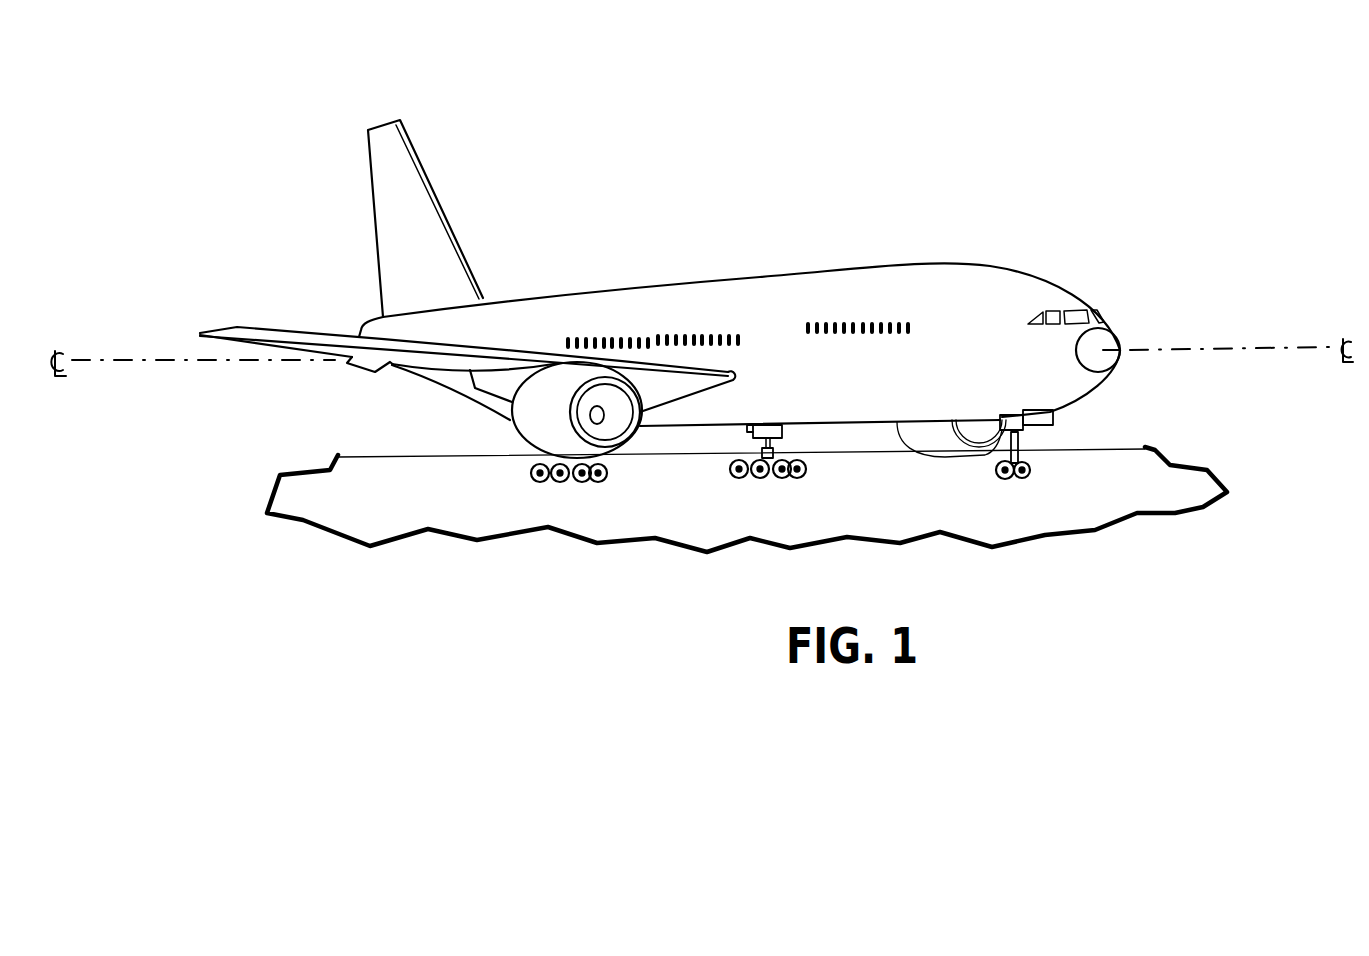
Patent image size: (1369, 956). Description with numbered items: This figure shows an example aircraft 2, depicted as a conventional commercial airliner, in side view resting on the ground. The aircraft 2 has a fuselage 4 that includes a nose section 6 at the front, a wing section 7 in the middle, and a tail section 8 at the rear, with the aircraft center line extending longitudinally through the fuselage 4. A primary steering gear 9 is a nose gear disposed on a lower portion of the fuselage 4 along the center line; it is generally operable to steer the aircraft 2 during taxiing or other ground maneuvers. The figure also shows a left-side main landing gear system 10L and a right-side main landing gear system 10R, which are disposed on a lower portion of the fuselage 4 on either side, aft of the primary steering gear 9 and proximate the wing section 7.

The aircraft 2 is at (980, 214).
The fuselage 4 is at (835, 160).
The nose section 6 is at (1116, 318).
The wing section 7 is at (642, 287).
The tail section 8 is at (395, 394).
The primary steering gear 9 is at (1020, 490).
The right-side main landing gear system 10R is at (520, 475).
The left-side main landing gear system 10L is at (820, 472).